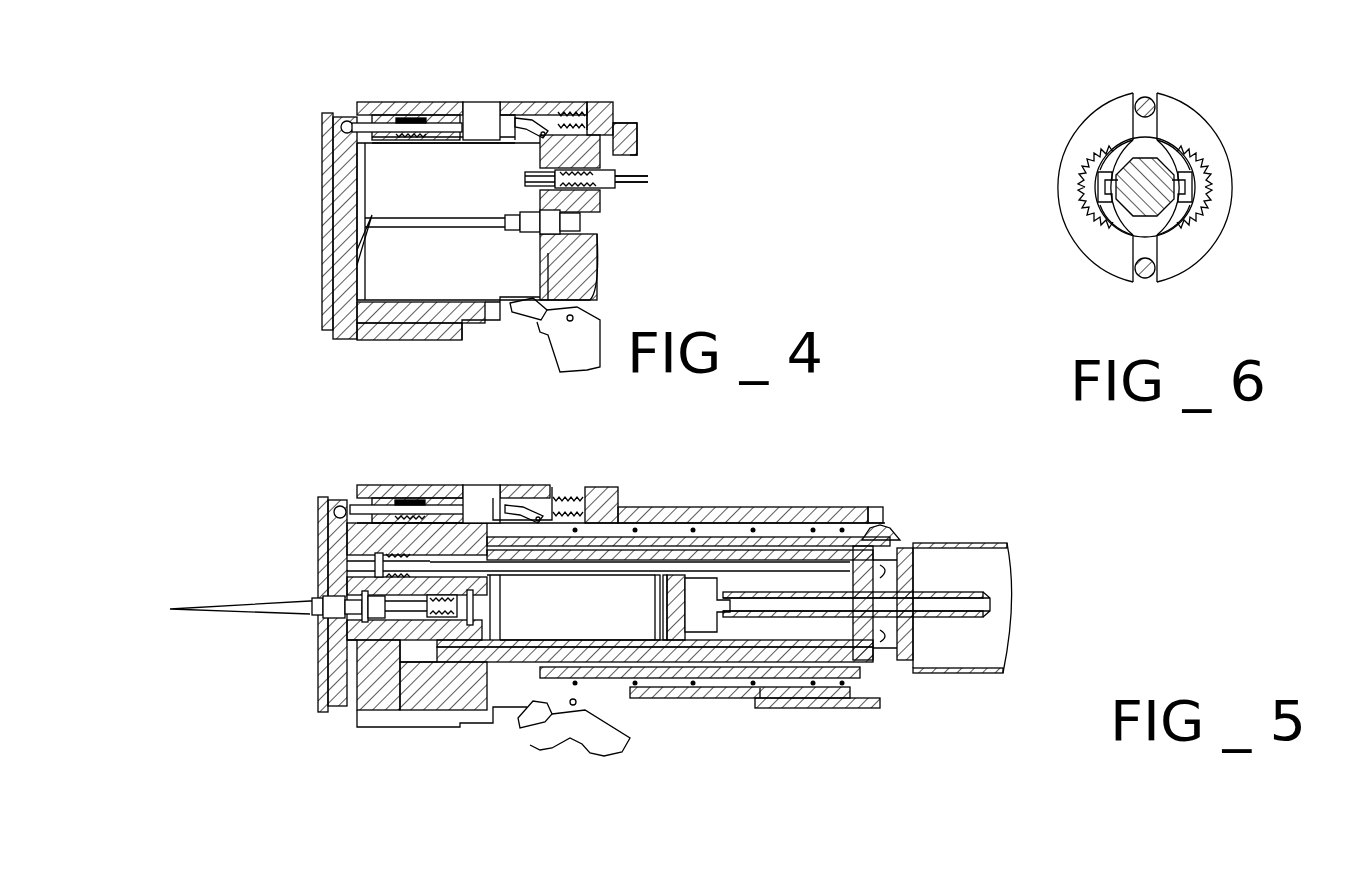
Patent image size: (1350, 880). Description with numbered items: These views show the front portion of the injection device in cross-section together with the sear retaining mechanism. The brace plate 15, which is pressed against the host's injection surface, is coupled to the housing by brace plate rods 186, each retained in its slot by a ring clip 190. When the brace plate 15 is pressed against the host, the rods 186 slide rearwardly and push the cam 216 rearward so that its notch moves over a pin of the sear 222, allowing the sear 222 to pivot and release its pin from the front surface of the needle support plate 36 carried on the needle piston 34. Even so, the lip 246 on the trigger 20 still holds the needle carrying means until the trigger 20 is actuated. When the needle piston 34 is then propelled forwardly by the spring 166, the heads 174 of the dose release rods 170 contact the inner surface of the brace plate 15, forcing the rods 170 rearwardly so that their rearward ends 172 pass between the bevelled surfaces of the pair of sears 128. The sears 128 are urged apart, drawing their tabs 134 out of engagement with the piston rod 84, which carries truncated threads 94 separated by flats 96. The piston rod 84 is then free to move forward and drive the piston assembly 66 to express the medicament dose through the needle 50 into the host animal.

In FIG. 4, the brace plate 15 is at (330, 330).
In FIG. 5, the brace plate 15 is at (340, 706).
In FIG. 4, the trigger 20 is at (567, 362).
In FIG. 5, the trigger 20 is at (612, 742).
In FIG. 4, the needle piston 34 is at (590, 277).
In FIG. 5, the needle piston 34 is at (655, 542).
In FIG. 4, the needle support plate 36 is at (535, 270).
In FIG. 4, the needle 50 is at (393, 228).
In FIG. 5, the needle 50 is at (228, 613).
In FIG. 5, the piston assembly 66 is at (673, 632).
In FIG. 6, the piston rod 84 is at (1163, 212).
In FIG. 5, the piston rod 84 is at (838, 620).
In FIG. 6, the truncated threads 94 is at (1160, 200).
In FIG. 6, the flats 96 is at (1200, 165).
In FIG. 6, the sears 128 is at (1213, 130).
In FIG. 5, the sears 128 is at (890, 660).
In FIG. 6, the tab 134 is at (1092, 172).
In FIG. 5, the spring 166 is at (765, 692).
In FIG. 4, the dose release rod 170 is at (641, 180).
In FIG. 5, the dose release rod 170 is at (545, 570).
In FIG. 6, the rearward ends 172 is at (1148, 95).
In FIG. 5, the rearward ends 172 is at (900, 540).
In FIG. 4, the heads 174 is at (530, 178).
In FIG. 5, the heads 174 is at (350, 560).
In FIG. 4, the brace plate rods 186 is at (373, 112).
In FIG. 5, the brace plate rods 186 is at (378, 492).
In FIG. 4, the ring clip 190 is at (400, 118).
In FIG. 5, the ring clip 190 is at (399, 500).
In FIG. 4, the cam 216 is at (514, 112).
In FIG. 5, the cam 216 is at (508, 492).
In FIG. 4, the sear 222 is at (538, 130).
In FIG. 5, the sear 222 is at (538, 513).
In FIG. 4, the lip 246 is at (550, 300).
In FIG. 5, the lip 246 is at (545, 702).